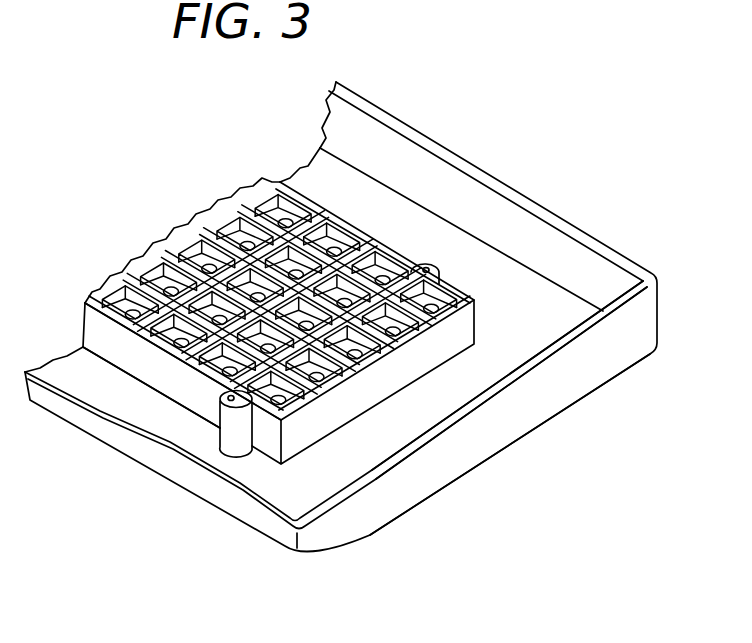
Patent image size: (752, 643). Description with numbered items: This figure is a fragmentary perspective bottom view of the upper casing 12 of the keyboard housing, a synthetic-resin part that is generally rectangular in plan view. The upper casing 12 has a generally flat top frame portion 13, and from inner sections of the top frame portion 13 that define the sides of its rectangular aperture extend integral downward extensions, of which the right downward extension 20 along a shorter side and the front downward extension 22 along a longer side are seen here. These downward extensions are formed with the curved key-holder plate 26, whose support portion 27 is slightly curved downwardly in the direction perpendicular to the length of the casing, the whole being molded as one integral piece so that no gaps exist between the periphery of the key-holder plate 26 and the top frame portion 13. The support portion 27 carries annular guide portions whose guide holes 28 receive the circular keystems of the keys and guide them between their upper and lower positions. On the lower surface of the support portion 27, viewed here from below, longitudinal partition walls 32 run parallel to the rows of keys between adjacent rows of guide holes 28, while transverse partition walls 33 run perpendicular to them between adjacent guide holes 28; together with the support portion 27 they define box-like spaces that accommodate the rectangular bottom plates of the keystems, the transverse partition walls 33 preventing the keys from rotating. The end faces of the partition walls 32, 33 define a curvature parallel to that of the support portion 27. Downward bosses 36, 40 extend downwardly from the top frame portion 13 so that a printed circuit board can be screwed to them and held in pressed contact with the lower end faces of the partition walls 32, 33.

The upper casing 12 is at (518, 178).
The top frame portion 13 is at (552, 336).
The right downward extension 20 is at (372, 393).
The front downward extension 22 is at (127, 365).
The key-holder plate 26 is at (208, 203).
The support portion 27 is at (175, 233).
The guide hole 28 is at (372, 333).
The longitudinal partition walls 32 is at (362, 342).
The transverse partition walls 33 is at (162, 283).
The downward boss 36 is at (441, 271).
The downward boss 40 is at (238, 451).